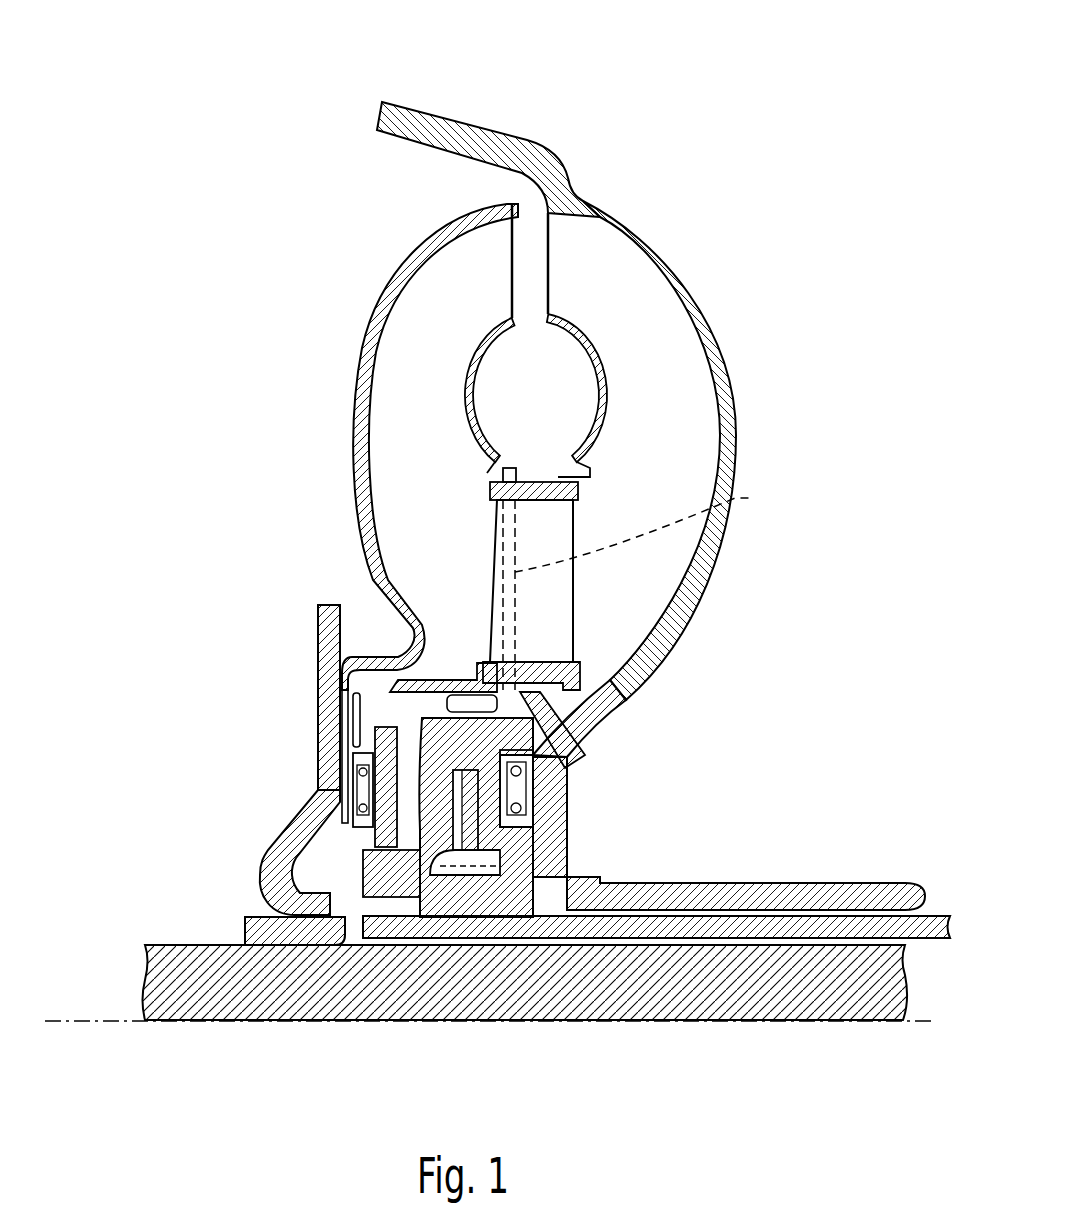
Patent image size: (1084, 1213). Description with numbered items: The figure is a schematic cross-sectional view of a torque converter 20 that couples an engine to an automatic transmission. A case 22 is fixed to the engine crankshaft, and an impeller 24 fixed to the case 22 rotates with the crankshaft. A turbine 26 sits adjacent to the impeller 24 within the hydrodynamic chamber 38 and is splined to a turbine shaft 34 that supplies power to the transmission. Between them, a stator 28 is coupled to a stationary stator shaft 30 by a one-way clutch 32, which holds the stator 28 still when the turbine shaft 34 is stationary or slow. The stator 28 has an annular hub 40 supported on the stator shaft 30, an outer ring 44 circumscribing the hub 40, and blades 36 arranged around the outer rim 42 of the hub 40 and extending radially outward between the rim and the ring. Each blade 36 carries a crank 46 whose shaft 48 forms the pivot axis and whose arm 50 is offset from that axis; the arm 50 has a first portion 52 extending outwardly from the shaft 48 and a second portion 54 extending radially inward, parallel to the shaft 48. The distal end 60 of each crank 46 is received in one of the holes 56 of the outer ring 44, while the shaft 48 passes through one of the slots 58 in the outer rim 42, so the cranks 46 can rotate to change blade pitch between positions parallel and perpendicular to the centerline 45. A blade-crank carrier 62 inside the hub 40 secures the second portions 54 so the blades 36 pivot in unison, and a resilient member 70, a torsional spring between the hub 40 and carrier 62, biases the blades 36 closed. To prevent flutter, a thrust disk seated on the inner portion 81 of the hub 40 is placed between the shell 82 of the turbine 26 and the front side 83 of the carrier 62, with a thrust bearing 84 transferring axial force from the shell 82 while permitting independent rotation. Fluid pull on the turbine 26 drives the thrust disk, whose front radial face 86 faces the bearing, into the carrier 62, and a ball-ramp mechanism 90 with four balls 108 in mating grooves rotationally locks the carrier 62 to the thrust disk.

The torque converter 20 is at (733, 97).
The case 22 is at (514, 150).
The impeller 24 is at (630, 312).
The turbine 26 is at (445, 305).
The stator 28 is at (530, 508).
The stator shaft 30 is at (795, 915).
The one-way clutch 32 is at (500, 875).
The turbine shaft 34 is at (168, 942).
The blades 36 is at (555, 578).
The hydrodynamic chamber 38 is at (540, 342).
The annular hub 40 is at (538, 795).
The outer rim 42 is at (568, 682).
The outer ring 44 is at (500, 492).
The centerline 45 is at (80, 1025).
The crank 46 is at (563, 740).
The shaft 48 is at (648, 527).
The arm 50 is at (460, 688).
The first portion 52 is at (476, 690).
The second portion 54 is at (347, 676).
The holes 56 is at (490, 490).
The slots 58 is at (562, 702).
The distal end 60 is at (508, 468).
The blade-crank carrier 62 is at (357, 694).
The resilient member 70 is at (447, 870).
The inner portion 81 is at (383, 868).
The shell 82 is at (370, 662).
The front side 83 is at (466, 872).
The thrust bearing 84 is at (355, 825).
The front radial face 86 is at (362, 752).
The ball-ramp mechanism 90 is at (365, 770).
The ball 108 is at (350, 765).